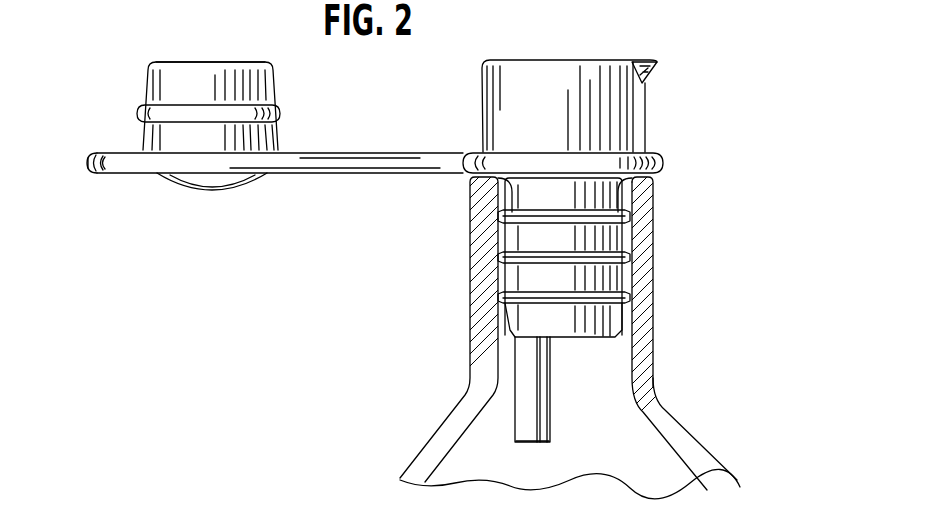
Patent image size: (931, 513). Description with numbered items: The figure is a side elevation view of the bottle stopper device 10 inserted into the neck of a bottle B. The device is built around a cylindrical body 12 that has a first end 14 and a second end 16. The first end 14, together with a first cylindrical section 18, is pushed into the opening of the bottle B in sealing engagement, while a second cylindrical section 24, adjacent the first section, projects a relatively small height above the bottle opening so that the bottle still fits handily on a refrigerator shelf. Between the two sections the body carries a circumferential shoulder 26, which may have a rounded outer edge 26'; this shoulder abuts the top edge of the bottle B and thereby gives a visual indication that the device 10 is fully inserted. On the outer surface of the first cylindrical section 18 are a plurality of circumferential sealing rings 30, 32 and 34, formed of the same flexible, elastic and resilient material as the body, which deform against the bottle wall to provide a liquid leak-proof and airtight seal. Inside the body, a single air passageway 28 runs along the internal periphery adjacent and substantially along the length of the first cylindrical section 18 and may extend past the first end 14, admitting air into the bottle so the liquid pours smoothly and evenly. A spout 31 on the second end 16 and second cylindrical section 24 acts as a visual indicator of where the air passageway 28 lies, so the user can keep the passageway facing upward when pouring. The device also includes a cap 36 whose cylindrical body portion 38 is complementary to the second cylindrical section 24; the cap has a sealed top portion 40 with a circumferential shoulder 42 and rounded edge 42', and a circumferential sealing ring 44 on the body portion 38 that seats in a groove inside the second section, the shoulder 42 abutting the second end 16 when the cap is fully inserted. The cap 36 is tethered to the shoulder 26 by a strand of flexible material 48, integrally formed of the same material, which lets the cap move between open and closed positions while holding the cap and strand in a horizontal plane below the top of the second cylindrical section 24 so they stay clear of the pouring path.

The bottle stopper device 10 is at (392, 243).
The cylindrical body 12 is at (678, 187).
The first end 14 is at (568, 346).
The second end 16 is at (562, 48).
The first cylindrical section 18 is at (622, 278).
The second cylindrical section 24 is at (662, 98).
The circumferential shoulder 26 is at (611, 141).
The rounded outer edge 26' is at (689, 139).
The air passageway 28 is at (538, 422).
The circumferential sealing ring 30 is at (652, 207).
The spout 31 is at (653, 62).
The circumferential sealing ring 32 is at (625, 257).
The circumferential sealing ring 34 is at (620, 298).
The cap 36 is at (214, 158).
The body portion 38 is at (148, 82).
The sealed top portion 40 is at (222, 193).
The circumferential shoulder 42 is at (110, 201).
The rounded edge 42' is at (70, 144).
The circumferential sealing ring 44 is at (282, 116).
The strand of flexible material 48 is at (418, 148).
The bottle B is at (655, 383).